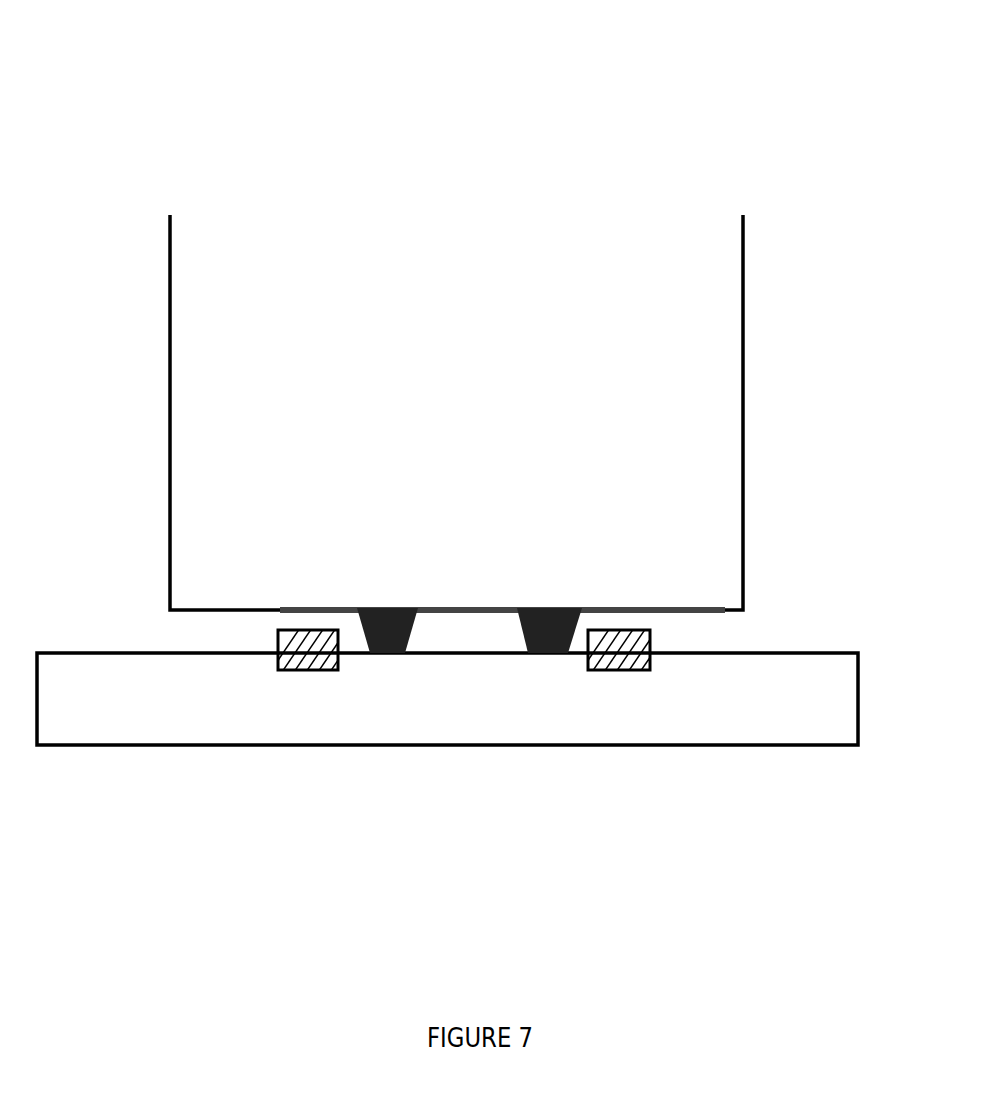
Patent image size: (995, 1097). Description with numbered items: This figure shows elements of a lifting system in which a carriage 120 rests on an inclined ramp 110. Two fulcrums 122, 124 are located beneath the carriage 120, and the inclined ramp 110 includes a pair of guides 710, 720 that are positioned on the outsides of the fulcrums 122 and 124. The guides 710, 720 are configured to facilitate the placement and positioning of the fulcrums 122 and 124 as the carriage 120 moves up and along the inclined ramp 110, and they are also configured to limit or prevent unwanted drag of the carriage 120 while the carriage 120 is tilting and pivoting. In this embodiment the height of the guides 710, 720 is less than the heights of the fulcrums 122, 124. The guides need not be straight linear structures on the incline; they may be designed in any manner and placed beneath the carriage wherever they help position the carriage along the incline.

The carriage 120 is at (168, 215).
The inclined ramp 110 is at (447, 699).
The fulcrum 122 is at (407, 546).
The fulcrum 124 is at (520, 548).
The guide 710 is at (207, 630).
The guide 720 is at (707, 625).